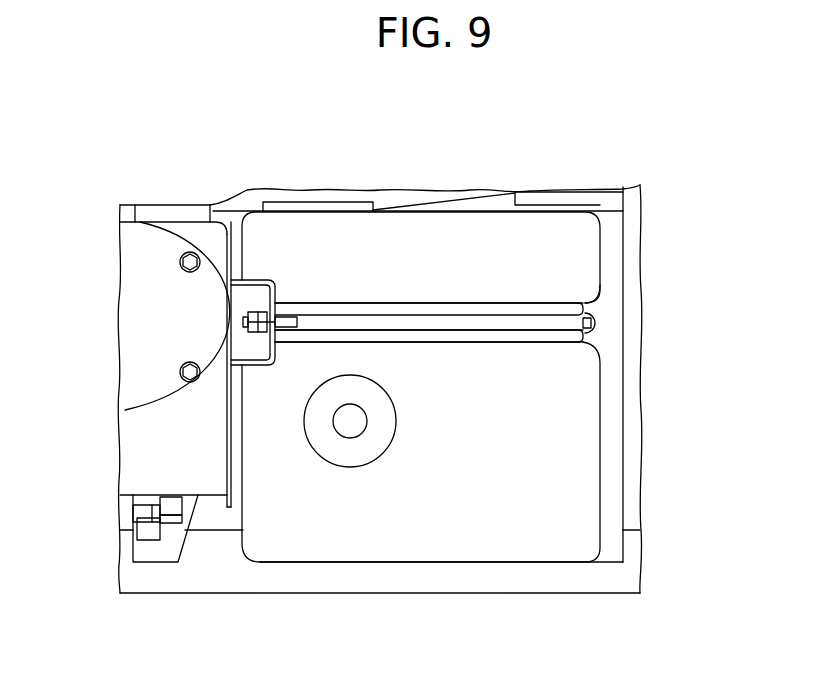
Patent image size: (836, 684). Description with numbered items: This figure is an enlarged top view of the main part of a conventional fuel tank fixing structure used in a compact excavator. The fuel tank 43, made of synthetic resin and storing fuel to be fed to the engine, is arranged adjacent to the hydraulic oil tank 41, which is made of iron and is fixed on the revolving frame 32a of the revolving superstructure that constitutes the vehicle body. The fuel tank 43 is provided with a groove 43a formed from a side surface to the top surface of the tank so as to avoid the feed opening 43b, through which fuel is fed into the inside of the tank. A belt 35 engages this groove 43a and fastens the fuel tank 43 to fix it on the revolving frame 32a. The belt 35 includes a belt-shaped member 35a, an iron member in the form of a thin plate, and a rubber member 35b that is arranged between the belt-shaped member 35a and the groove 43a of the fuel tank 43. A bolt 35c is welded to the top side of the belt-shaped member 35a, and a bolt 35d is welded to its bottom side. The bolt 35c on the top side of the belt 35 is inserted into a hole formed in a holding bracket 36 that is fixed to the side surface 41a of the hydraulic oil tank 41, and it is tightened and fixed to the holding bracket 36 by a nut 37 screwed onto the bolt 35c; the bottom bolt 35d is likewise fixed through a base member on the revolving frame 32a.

The revolving frame 32a is at (570, 577).
The belt 35 is at (453, 303).
The belt-shaped member 35a is at (520, 323).
The rubber member 35b is at (390, 302).
The bolt 35c is at (294, 317).
The bolt 35d is at (598, 323).
The holding bracket 36 is at (248, 282).
The nut 37 is at (263, 316).
The hydraulic oil tank 41 is at (138, 462).
The side surface 41a is at (232, 468).
The fuel tank 43 is at (565, 410).
The groove 43a is at (587, 303).
The feed opening 43b is at (360, 452).